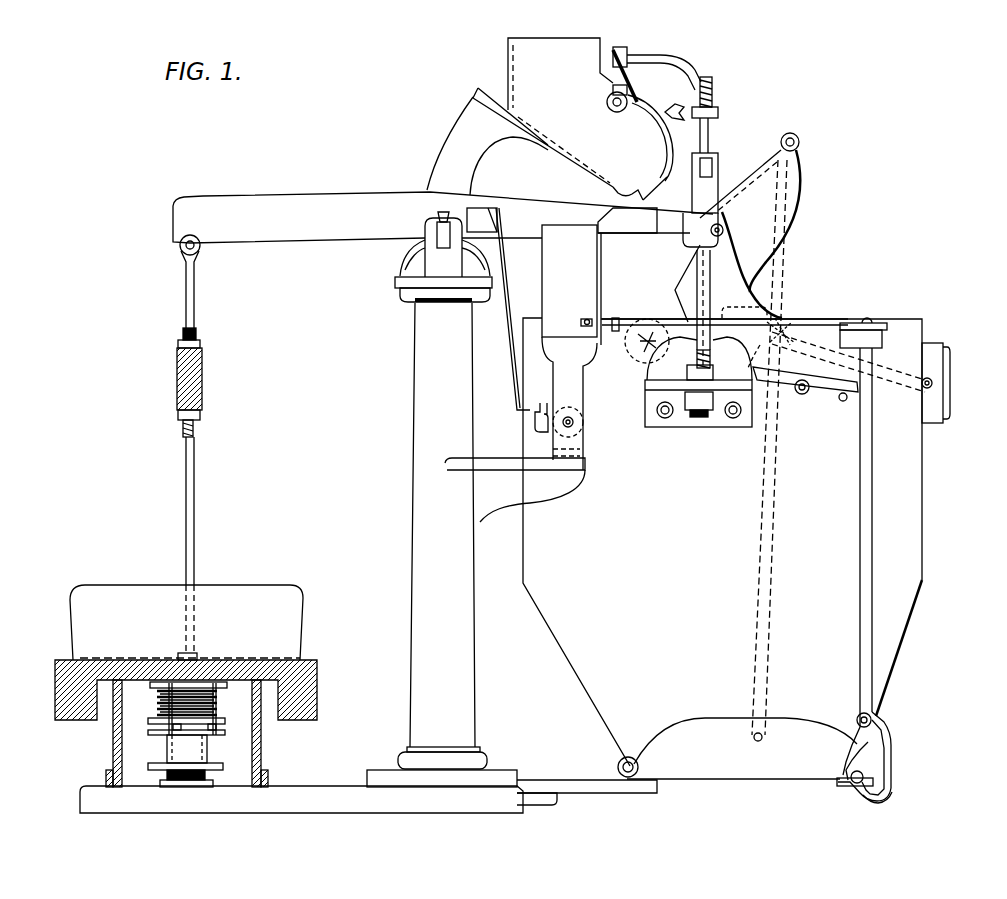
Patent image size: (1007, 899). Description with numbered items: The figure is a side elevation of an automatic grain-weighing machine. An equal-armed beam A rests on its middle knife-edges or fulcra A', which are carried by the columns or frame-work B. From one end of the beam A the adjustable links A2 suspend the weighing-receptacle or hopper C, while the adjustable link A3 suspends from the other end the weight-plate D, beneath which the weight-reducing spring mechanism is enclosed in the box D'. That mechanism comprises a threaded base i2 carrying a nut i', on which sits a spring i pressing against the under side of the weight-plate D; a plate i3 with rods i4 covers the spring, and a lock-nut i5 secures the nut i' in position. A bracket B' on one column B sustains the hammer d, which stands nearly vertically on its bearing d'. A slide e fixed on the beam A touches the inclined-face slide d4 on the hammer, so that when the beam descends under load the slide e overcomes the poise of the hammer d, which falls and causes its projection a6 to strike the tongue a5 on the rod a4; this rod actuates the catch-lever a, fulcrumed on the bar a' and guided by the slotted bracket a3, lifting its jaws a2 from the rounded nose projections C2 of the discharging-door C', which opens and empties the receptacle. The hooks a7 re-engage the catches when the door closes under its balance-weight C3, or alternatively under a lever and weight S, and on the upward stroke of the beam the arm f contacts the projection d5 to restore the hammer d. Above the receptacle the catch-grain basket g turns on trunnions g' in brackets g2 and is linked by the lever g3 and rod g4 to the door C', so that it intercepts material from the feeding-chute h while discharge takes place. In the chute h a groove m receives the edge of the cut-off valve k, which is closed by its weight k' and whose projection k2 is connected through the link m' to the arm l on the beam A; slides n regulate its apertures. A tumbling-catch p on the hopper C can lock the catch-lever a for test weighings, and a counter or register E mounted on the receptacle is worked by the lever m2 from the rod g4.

The equal-armed beam A is at (443, 217).
The fulcra A' is at (449, 212).
The adjustable links A2 is at (692, 272).
The adjustable link A3 is at (191, 305).
The catch-lever a is at (877, 574).
The bar a' is at (882, 720).
The jaws a2 is at (881, 798).
The bracket a3 is at (883, 343).
The rod a4 is at (837, 321).
The projection a5 is at (586, 318).
The projection a6 is at (615, 318).
The curved piece or hook a7 is at (850, 766).
The columns B is at (442, 502).
The bracket B' is at (515, 485).
The weighing-receptacle C is at (719, 561).
The discharging-door C' is at (745, 743).
The rounded nose projections C2 is at (857, 788).
The balance-weight C3 is at (563, 781).
The weight pan D is at (182, 689).
The box D' is at (197, 733).
The hammer d is at (569, 347).
The bearing d' is at (579, 422).
The slide d4 is at (602, 262).
The projection d5 is at (543, 403).
The counter E is at (944, 367).
The slide e is at (627, 221).
The arm f is at (508, 297).
The catch-grain g is at (750, 221).
The trunnions g' is at (736, 235).
The brackets g2 is at (750, 292).
The lever g3 is at (765, 171).
The rod g4 is at (790, 270).
The feeding-chute h is at (547, 119).
The spring i is at (172, 704).
The nut i' is at (176, 729).
The base i2 is at (221, 771).
The plate i3 is at (152, 685).
The rods i4 is at (216, 703).
The lock-nut i5 is at (187, 749).
The cut-off valve k is at (650, 138).
The weight k' is at (665, 140).
The projection k2 is at (649, 101).
The arm l is at (683, 61).
The groove m is at (628, 182).
The link m' is at (632, 91).
The lever m2 is at (822, 350).
The slides n is at (677, 127).
The tumbling-catch p is at (815, 390).
The lever and weight S is at (672, 320).